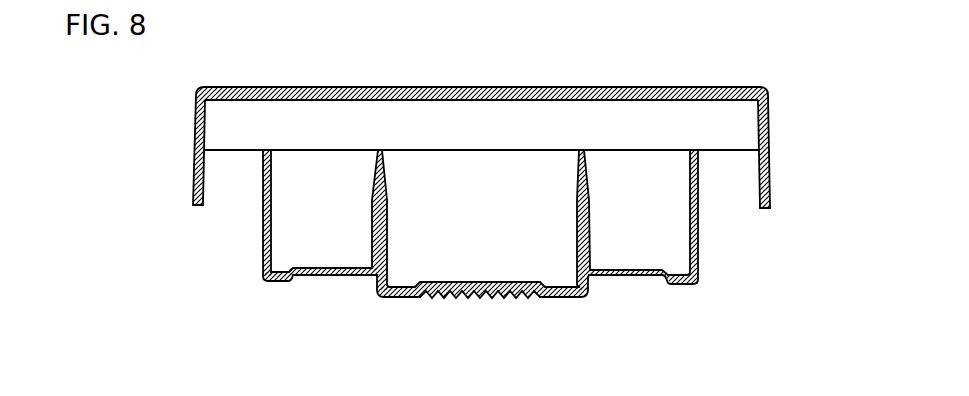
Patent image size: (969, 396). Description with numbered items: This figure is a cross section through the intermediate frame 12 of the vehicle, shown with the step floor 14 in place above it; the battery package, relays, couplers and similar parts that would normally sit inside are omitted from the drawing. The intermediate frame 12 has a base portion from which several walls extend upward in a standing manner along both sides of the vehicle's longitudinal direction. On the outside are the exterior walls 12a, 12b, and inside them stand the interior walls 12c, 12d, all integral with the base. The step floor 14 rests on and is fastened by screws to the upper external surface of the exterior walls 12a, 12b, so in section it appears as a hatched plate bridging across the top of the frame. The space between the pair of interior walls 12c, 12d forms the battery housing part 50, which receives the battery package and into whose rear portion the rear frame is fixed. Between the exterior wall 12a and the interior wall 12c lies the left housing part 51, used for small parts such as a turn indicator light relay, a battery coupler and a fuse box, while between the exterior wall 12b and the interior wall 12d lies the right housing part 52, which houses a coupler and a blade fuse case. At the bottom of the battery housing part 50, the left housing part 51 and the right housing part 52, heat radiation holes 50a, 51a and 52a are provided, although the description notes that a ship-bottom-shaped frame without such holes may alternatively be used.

The step floor 14 is at (680, 88).
The intermediate frame 12 is at (699, 279).
The exterior wall 12a is at (263, 222).
The exterior wall 12b is at (698, 225).
The interior wall 12c is at (372, 234).
The interior wall 12d is at (588, 234).
The battery housing part 50 is at (493, 215).
The heat radiation hole 50a is at (400, 290).
The left housing part 51 is at (332, 213).
The heat radiation hole 51a is at (282, 281).
The right housing part 52 is at (653, 215).
The heat radiation hole 52a is at (677, 284).